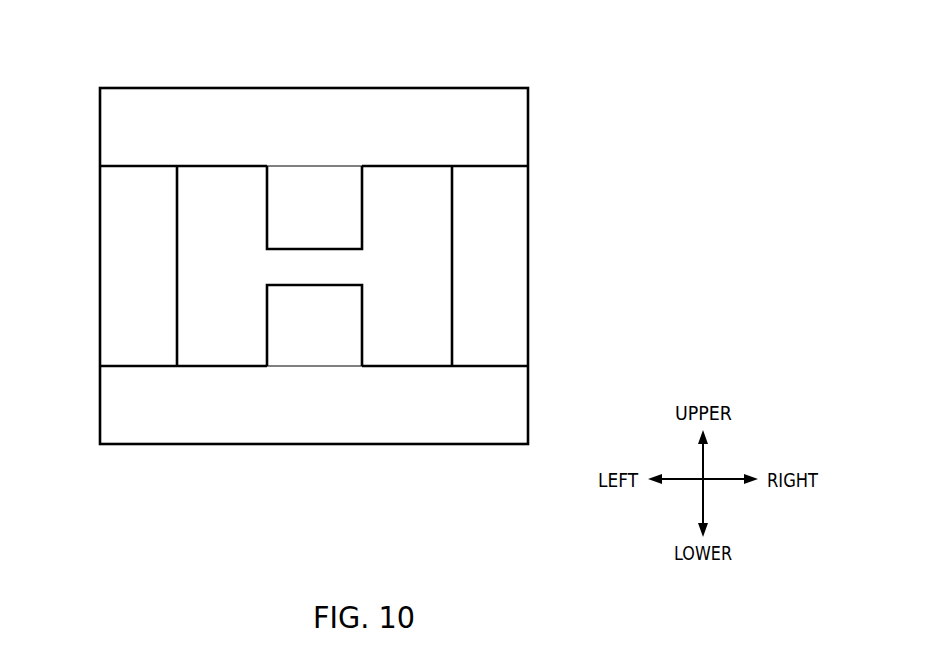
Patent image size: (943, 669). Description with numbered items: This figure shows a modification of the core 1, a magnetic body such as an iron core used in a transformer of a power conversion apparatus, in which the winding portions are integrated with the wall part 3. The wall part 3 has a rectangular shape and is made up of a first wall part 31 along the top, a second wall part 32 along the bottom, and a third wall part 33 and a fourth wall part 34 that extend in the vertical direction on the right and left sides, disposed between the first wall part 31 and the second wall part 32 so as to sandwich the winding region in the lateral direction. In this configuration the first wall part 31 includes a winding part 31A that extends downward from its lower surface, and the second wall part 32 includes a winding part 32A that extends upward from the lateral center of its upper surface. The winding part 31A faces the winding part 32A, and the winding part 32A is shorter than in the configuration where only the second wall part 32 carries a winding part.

The core 1 is at (665, 42).
The wall part 3 is at (484, 89).
The first wall part 31 is at (275, 110).
The winding part 31A is at (328, 212).
The second wall part 32 is at (230, 416).
The winding part 32A is at (309, 332).
The third wall part 33 is at (497, 249).
The fourth wall part 34 is at (118, 285).